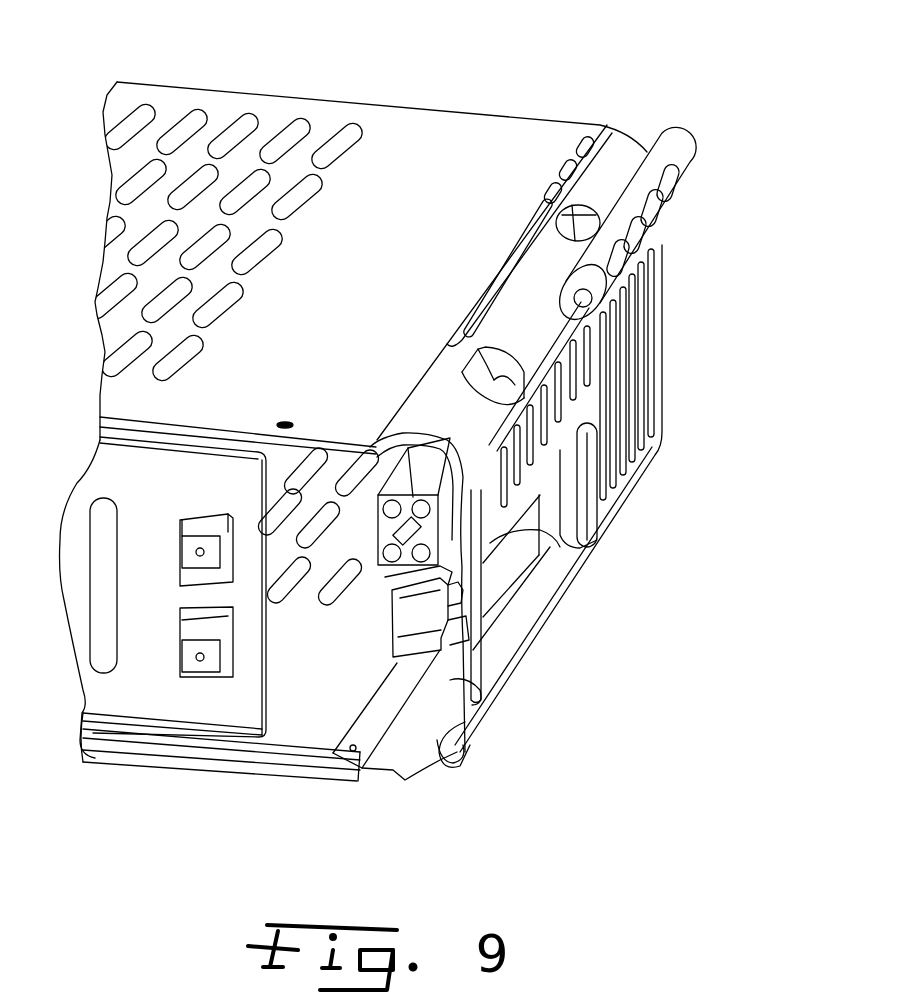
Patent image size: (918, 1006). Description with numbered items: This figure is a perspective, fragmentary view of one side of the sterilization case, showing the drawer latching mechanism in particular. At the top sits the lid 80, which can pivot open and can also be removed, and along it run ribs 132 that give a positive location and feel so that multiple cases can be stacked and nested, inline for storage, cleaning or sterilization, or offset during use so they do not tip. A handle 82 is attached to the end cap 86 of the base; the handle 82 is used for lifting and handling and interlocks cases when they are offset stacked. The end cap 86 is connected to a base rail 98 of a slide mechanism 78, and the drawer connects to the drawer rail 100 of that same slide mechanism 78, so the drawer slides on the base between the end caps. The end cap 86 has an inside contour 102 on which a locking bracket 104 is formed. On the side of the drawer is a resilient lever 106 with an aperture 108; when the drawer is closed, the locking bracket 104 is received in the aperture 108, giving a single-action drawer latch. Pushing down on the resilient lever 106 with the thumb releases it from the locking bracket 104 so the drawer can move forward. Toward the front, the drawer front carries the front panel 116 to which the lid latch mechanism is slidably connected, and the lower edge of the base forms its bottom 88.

The lid 80 is at (405, 133).
The ribs 132 is at (522, 248).
The handle 82 is at (685, 150).
The end cap 86 is at (656, 437).
The base rail 98 is at (445, 527).
The slide mechanism 78 is at (378, 525).
The drawer rail 100 is at (383, 567).
The locking bracket 104 is at (450, 577).
The aperture 108 is at (450, 627).
The resilient lever 106 is at (472, 695).
The inside contour 102 is at (440, 737).
The front panel 116 is at (148, 693).
The bottom 88 is at (310, 697).